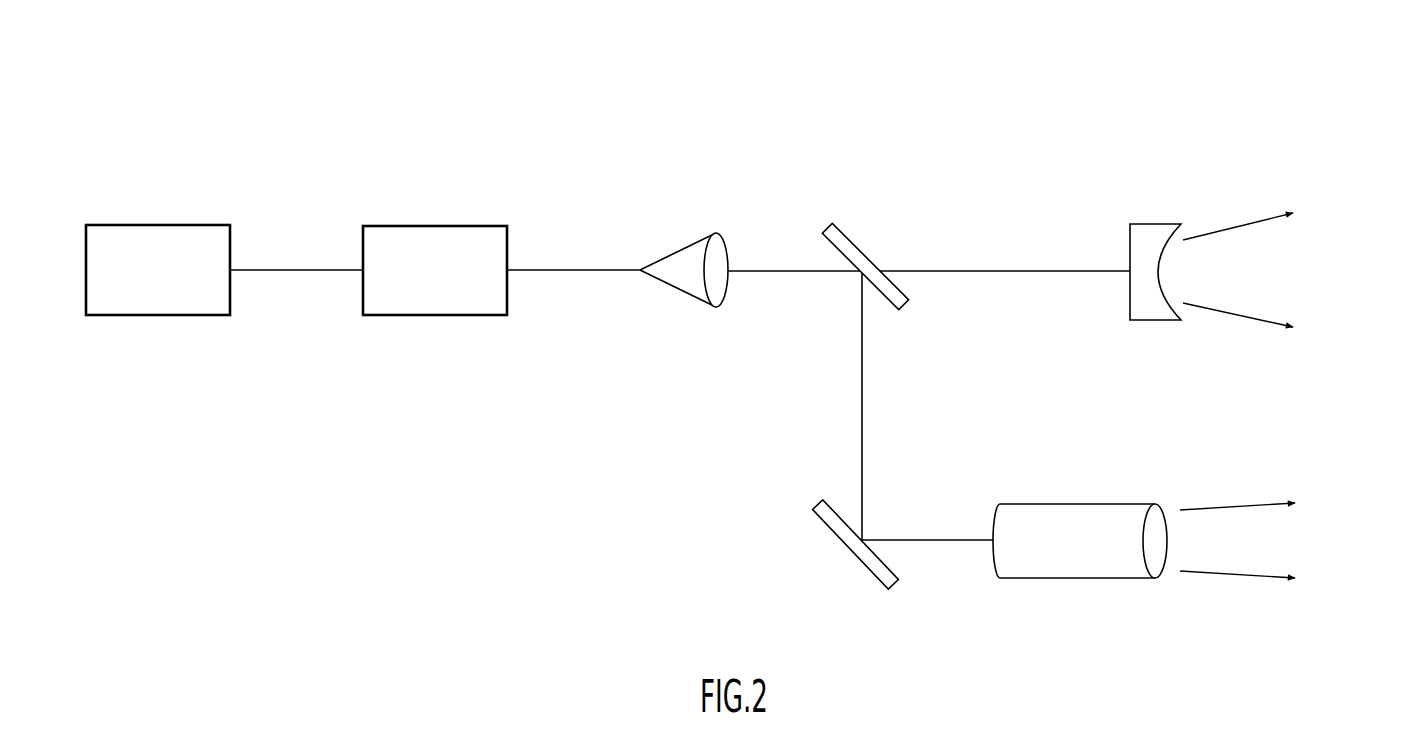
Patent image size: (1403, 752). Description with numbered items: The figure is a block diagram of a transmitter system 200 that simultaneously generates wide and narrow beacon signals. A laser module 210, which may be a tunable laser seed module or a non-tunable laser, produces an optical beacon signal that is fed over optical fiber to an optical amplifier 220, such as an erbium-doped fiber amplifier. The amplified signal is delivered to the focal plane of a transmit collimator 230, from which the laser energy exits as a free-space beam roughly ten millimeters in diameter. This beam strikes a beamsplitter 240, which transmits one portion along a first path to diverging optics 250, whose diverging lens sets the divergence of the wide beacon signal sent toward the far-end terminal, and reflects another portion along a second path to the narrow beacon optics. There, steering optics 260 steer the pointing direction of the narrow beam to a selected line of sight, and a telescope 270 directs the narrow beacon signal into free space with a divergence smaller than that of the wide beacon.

The beacon system 200 is at (742, 92).
The laser module 210 is at (156, 225).
The optical amplifier 220 is at (434, 226).
The transmit collimator 230 is at (682, 250).
The beamsplitter 240 is at (856, 240).
The diverging optics 250 is at (1155, 223).
The steering optics 260 is at (835, 530).
The telescope 270 is at (1107, 578).